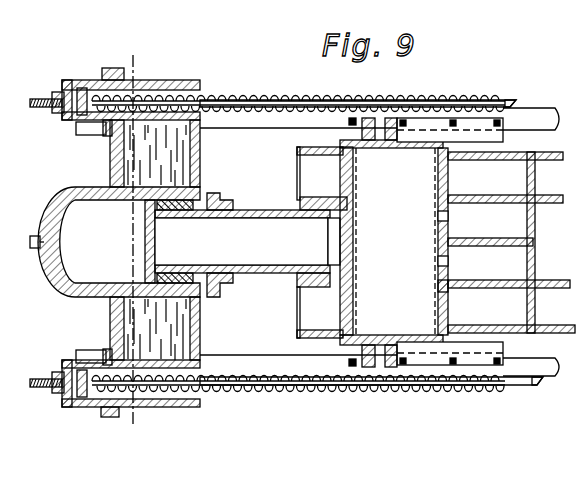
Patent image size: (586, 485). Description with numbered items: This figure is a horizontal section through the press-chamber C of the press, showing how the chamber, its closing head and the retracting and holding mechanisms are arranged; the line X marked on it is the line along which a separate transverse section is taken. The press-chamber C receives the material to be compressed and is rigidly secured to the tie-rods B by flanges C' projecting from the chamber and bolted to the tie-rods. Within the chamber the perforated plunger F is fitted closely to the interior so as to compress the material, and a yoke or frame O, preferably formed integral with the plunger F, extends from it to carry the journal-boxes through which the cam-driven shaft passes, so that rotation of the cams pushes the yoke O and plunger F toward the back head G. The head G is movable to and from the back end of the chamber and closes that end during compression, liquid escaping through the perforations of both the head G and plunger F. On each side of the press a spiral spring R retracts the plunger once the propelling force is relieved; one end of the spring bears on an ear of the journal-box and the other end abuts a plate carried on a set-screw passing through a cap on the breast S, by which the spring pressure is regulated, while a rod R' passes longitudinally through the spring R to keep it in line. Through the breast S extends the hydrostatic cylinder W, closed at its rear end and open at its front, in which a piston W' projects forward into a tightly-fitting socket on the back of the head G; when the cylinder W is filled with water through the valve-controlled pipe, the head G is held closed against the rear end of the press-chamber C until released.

The breast S is at (110, 322).
The press-chamber C is at (234, 246).
The section line X is at (196, 58).
The hydrostatic cylinder W is at (115, 242).
The piston W' is at (246, 242).
The head G is at (355, 283).
The wall openings a' is at (456, 241).
The plunger F is at (438, 286).
The yoke O is at (511, 242).
The spiral spring R is at (317, 246).
The rod R' is at (524, 247).
The tie-rods B is at (536, 126).
The flanges C' is at (444, 242).